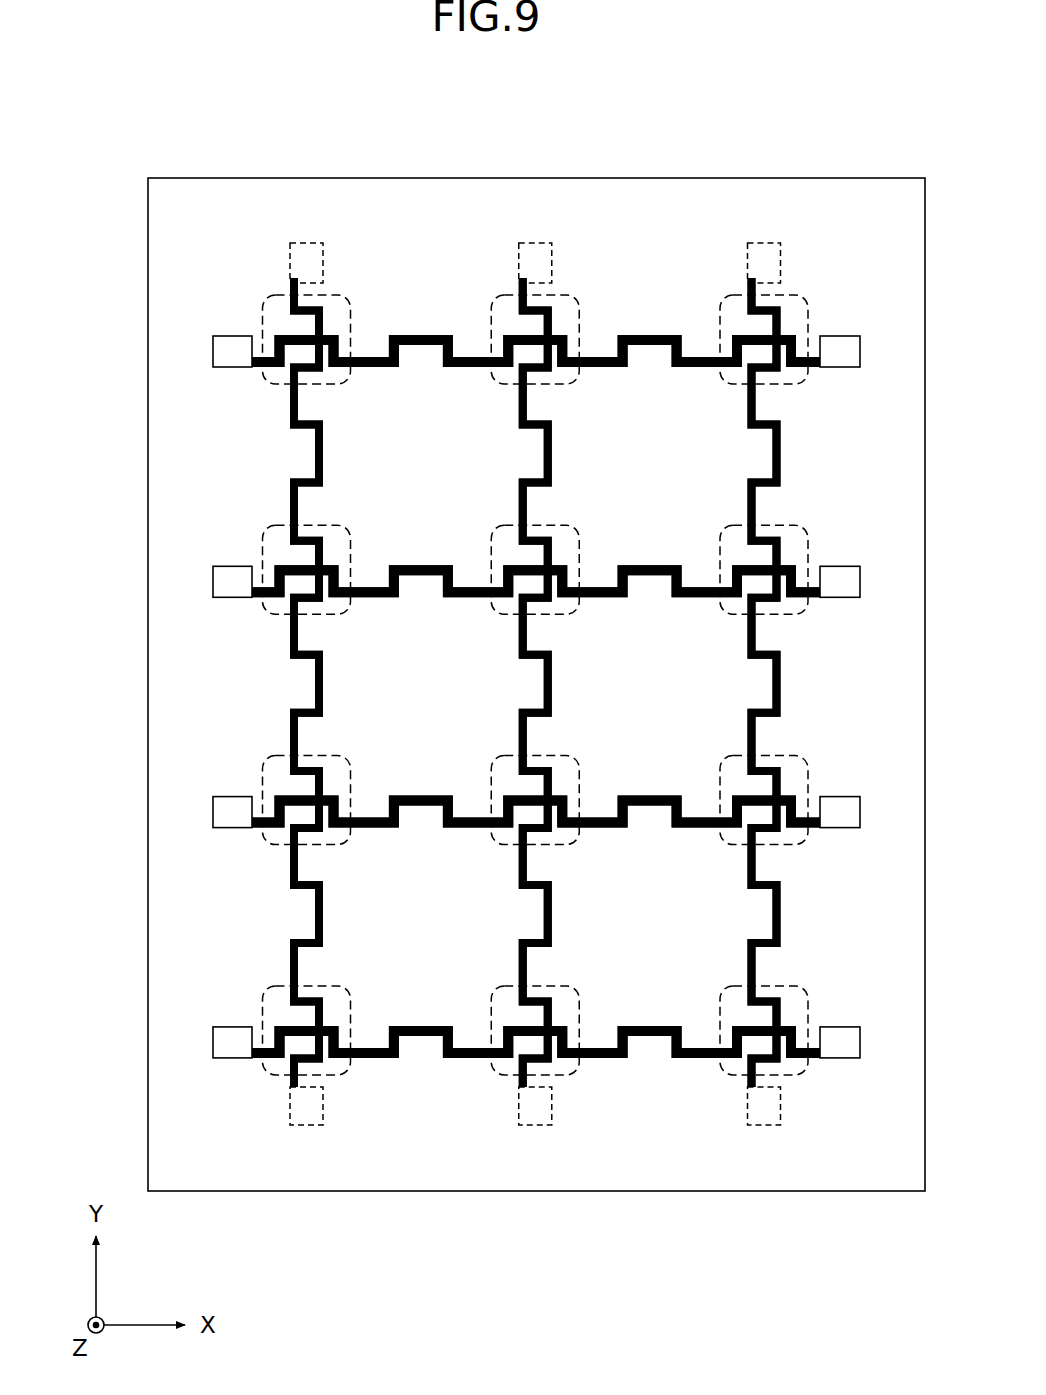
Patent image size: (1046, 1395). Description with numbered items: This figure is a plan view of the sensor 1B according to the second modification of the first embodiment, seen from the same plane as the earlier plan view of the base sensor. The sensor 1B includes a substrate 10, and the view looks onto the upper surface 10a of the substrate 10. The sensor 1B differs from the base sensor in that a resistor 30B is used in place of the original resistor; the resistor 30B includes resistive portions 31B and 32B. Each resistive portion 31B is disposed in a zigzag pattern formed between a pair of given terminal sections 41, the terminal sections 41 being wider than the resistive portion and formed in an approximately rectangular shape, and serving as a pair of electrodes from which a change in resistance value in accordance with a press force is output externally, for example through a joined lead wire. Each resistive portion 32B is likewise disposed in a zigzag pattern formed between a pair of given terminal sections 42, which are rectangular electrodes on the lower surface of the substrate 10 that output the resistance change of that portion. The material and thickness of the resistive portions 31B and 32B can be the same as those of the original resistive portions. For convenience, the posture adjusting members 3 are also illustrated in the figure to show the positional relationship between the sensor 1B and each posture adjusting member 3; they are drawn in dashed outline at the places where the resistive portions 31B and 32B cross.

The sensor 1B is at (73, 87).
The substrate 10 is at (138, 334).
The upper surface 10a is at (167, 1107).
The resistor 30B is at (353, 118).
The resistive portion 31B is at (410, 336).
The resistive portion 32B is at (522, 420).
The terminal section 41 is at (841, 345).
The terminal section 42 is at (756, 252).
The posture adjusting member 3 is at (800, 1073).